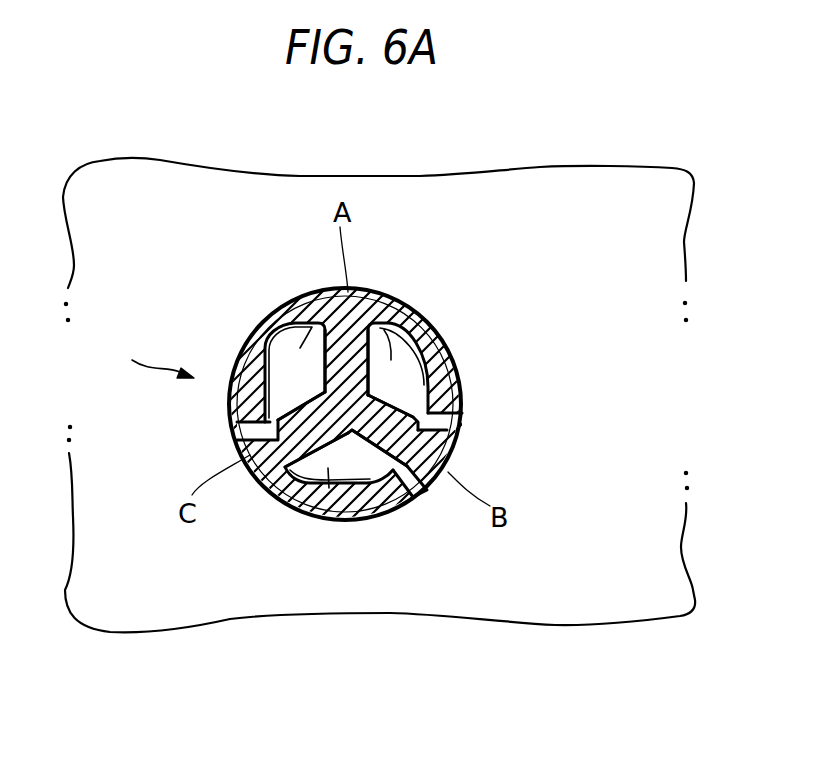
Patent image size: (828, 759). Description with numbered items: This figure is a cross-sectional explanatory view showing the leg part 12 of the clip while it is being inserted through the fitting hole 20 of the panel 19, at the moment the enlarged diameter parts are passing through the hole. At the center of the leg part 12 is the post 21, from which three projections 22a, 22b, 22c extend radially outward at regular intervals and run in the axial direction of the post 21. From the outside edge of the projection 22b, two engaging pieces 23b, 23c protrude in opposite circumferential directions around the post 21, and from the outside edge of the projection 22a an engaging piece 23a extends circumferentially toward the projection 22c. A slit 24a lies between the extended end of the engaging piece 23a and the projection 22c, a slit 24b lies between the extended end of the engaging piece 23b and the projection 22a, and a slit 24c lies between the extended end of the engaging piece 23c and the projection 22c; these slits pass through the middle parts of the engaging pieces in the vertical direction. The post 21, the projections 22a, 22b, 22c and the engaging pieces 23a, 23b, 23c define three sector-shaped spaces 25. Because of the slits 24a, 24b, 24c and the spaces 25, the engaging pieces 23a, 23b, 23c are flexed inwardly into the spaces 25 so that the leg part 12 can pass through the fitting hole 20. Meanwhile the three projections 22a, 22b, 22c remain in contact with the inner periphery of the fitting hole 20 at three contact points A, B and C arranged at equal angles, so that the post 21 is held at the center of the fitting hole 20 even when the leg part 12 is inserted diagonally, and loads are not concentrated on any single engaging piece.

The leg part 12 is at (147, 360).
The panel 19 is at (588, 183).
The fitting hole 20 is at (463, 417).
The post 21 is at (389, 314).
The projection 22a is at (268, 492).
The projection 22b is at (322, 297).
The projection 22c is at (400, 393).
The engaging piece 23a is at (368, 495).
The engaging piece 23b is at (252, 343).
The engaging piece 23c is at (452, 340).
The slit 24a is at (422, 482).
The slit 24b is at (240, 432).
The slit 24c is at (445, 432).
The space 25 is at (300, 343).